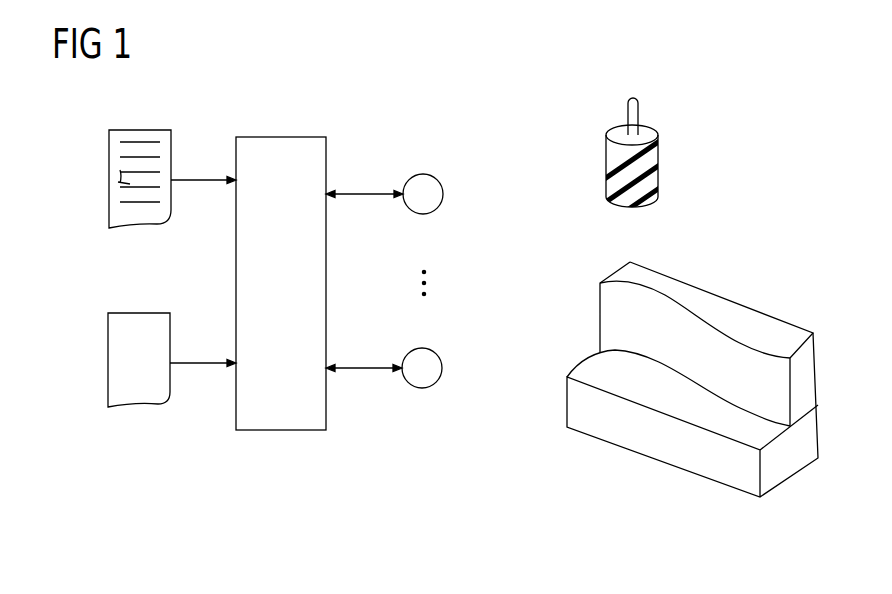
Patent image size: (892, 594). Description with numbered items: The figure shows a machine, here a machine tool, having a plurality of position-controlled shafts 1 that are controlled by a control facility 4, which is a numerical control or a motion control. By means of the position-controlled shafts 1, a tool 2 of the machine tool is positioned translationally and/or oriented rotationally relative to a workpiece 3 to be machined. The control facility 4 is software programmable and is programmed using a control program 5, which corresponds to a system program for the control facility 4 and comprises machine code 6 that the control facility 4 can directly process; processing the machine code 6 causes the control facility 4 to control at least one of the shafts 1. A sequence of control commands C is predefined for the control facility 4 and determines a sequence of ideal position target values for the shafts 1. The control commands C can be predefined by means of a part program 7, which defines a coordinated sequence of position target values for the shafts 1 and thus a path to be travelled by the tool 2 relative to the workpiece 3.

The position-controlled shaft 1 is at (443, 195).
The tool 2 is at (660, 167).
The workpiece 3 is at (633, 452).
The control facility 4 is at (288, 133).
The control program 5 is at (136, 227).
The machine code 6 is at (118, 182).
The part program 7 is at (108, 358).
The control commands C is at (193, 365).